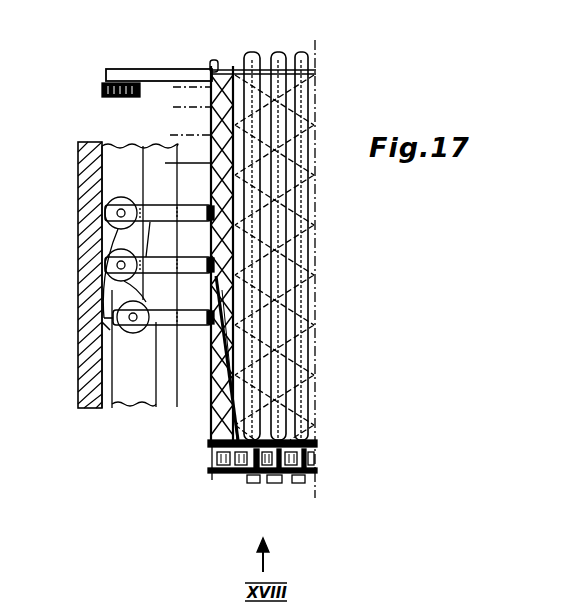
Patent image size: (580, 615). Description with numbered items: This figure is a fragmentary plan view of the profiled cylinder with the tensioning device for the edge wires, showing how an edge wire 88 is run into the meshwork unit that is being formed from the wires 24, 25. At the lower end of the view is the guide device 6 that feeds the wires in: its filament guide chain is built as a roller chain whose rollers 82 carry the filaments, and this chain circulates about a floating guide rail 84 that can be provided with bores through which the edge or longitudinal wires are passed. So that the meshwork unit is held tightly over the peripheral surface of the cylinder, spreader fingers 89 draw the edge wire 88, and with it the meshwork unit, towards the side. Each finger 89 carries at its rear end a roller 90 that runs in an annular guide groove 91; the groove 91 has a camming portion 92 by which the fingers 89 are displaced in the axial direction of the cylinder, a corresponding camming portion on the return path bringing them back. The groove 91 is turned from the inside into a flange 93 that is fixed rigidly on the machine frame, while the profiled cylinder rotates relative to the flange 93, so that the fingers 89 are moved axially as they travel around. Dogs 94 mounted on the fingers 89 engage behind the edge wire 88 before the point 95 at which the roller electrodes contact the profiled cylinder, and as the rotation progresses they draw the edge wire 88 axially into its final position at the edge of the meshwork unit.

The guide device 6 is at (281, 486).
The wire 24 is at (310, 229).
The wire 25 is at (303, 233).
The rollers 82 is at (232, 475).
The guide rail 84 is at (252, 476).
The edge wire 88 is at (210, 192).
The spreader fingers 89 is at (164, 68).
The rollers 90 is at (136, 96).
The annular guide groove 91 is at (118, 154).
The camming portion 92 is at (99, 317).
The flange 93 is at (88, 387).
The dogs 94 is at (214, 62).
The point 95 is at (100, 330).